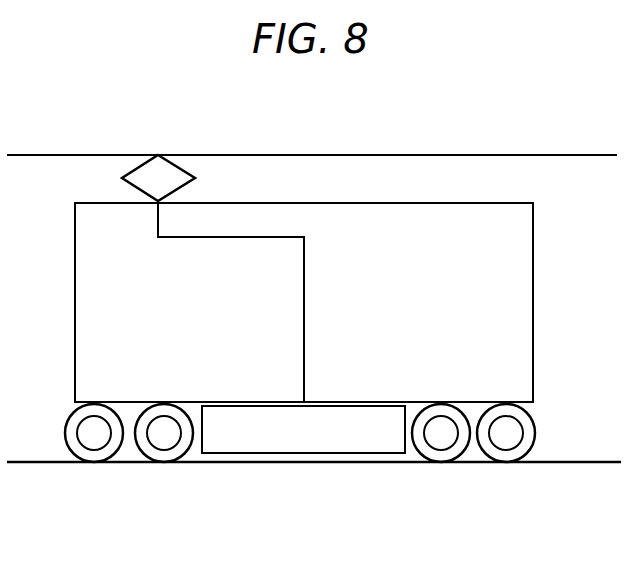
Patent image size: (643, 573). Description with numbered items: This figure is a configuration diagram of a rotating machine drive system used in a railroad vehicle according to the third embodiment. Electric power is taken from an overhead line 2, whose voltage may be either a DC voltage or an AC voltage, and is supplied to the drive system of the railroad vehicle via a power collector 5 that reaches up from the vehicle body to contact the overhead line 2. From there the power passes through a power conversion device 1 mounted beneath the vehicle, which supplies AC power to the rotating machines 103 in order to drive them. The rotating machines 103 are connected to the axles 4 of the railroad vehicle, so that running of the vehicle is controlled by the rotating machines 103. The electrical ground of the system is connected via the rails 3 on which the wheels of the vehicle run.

The power conversion device 1 is at (287, 455).
The overhead line 2 is at (217, 155).
The rails 3 is at (187, 464).
The axles 4 is at (118, 452).
The power collector 5 is at (195, 178).
The rotating machines 103 is at (95, 450).